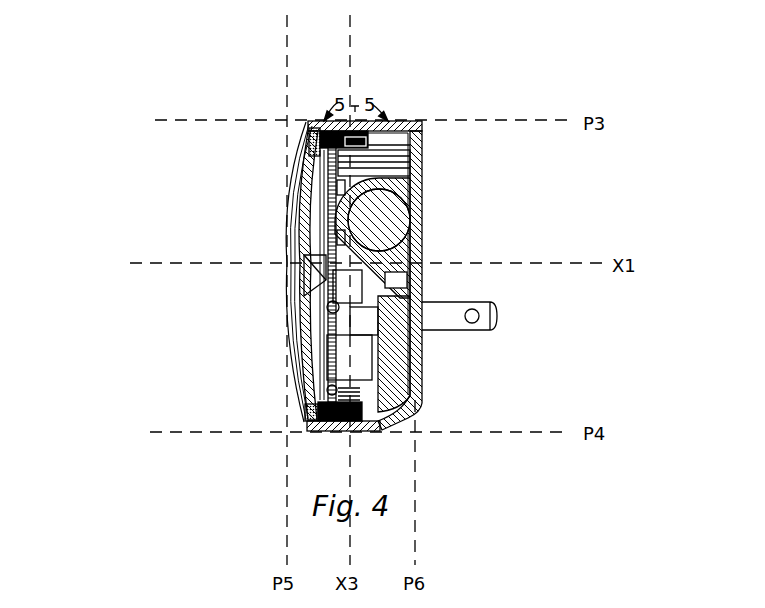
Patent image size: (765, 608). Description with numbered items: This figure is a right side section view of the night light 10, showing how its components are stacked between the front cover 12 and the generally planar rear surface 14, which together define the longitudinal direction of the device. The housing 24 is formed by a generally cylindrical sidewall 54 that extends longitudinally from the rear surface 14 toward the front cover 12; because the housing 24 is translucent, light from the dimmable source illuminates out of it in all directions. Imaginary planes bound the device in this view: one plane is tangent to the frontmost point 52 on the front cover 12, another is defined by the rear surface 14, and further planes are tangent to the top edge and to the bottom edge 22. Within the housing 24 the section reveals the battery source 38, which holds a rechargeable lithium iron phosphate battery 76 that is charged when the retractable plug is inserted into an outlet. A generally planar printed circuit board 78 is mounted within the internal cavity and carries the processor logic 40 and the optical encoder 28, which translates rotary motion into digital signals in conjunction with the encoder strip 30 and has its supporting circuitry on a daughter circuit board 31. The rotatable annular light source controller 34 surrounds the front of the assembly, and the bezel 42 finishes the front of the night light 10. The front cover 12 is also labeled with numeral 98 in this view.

The night light 10 is at (110, 160).
The front cover 12 is at (241, 272).
The rear surface 14 is at (428, 190).
The bottom edge 22 is at (352, 433).
The housing 24 is at (419, 219).
The optical encoder 28 is at (380, 137).
The encoder strip 30 is at (373, 148).
The daughter circuit board 31 is at (412, 158).
The light source controller 34 is at (300, 118).
The battery source 38 is at (421, 295).
The processor logic 40 is at (246, 275).
The bezel 42 is at (302, 412).
The frontmost point 52 is at (287, 260).
The cylindrical sidewall 54 is at (397, 130).
The battery 76 is at (397, 213).
The printed circuit board 78 is at (293, 215).
The lens 98 is at (292, 303).